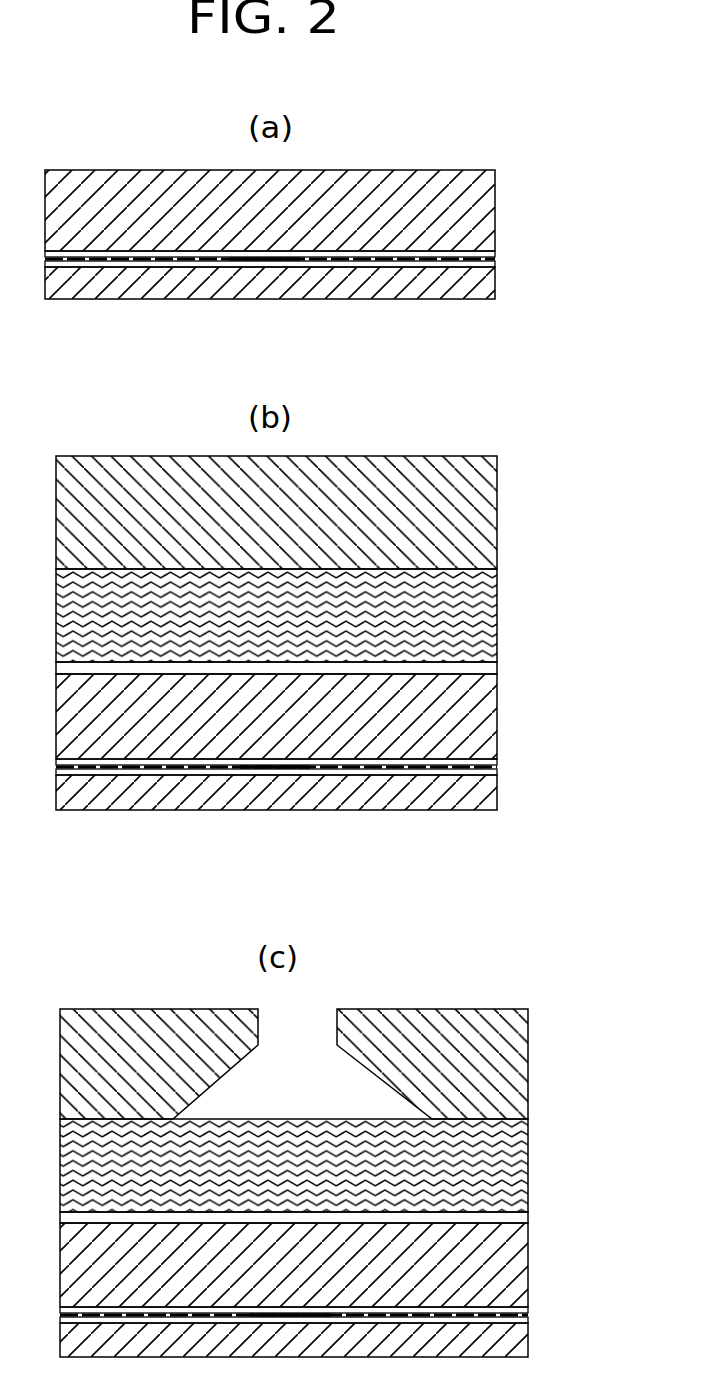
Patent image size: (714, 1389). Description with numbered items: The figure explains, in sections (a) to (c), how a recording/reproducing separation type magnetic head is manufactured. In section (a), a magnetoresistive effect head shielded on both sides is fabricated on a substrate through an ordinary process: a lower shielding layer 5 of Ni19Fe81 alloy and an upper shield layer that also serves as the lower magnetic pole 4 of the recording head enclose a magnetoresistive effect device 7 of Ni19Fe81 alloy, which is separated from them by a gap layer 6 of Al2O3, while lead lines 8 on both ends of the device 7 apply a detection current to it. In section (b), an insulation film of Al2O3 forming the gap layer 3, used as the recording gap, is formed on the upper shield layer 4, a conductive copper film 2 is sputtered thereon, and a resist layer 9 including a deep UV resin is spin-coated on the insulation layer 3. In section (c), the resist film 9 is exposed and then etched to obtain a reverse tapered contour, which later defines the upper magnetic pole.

The lower magnetic pole 4 is at (465, 212).
The lower shielding layer 5 is at (377, 283).
The gap layer 6 is at (480, 253).
The magnetoresistive effect device 7 is at (262, 262).
The lead lines 8 is at (495, 262).
The resist layer 9 is at (460, 508).
The conductive copper film 2 is at (470, 612).
The gap layer 3 is at (482, 667).